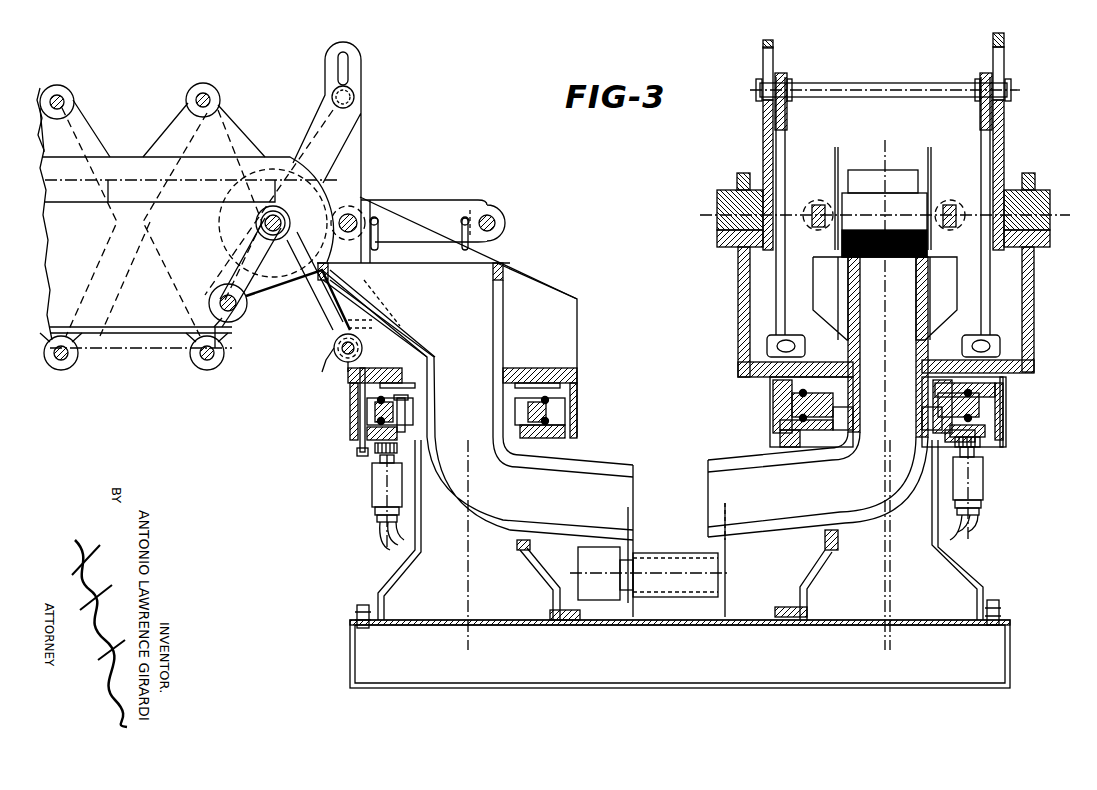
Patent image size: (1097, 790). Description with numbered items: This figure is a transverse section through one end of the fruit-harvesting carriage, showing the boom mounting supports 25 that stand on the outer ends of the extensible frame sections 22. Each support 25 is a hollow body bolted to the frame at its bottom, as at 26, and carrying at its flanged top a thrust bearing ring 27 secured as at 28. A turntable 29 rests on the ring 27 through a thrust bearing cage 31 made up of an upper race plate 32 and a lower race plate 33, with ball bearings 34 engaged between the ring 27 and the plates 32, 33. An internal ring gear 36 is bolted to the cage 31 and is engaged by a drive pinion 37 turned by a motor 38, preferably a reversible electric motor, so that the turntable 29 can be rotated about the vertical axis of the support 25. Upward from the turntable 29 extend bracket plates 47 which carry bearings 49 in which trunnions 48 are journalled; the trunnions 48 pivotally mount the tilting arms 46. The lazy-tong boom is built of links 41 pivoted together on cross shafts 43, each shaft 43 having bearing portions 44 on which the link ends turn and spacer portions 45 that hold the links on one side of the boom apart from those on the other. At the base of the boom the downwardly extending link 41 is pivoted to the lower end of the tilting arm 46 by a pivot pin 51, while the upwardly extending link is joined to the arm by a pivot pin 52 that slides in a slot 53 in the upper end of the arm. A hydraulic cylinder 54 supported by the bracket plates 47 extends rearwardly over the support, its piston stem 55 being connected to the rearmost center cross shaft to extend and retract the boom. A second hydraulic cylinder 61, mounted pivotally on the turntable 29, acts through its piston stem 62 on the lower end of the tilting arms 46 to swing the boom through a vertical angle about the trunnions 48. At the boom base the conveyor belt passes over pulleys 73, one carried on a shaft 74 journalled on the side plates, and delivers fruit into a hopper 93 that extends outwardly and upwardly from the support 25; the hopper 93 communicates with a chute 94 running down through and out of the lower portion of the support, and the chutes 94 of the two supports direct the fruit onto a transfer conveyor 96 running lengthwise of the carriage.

The extensible frame section 22 is at (350, 660).
The boom mounting support 25 is at (415, 556).
The bolted connection 26 is at (357, 612).
The thrust bearing ring 27 is at (370, 418).
The bolted connection 28 is at (408, 424).
The turntable 29 is at (578, 368).
The thrust bearing cage 31 is at (580, 408).
The upper race plate 32 is at (580, 388).
The lower race plate 33 is at (560, 440).
The ball bearings 34 is at (575, 418).
The internal ring gear 36 is at (372, 452).
The drive pinion 37 is at (372, 484).
The motor 38 is at (372, 508).
The link 41 is at (98, 140).
The cross shaft 43 is at (265, 228).
The bearing portion 44 is at (800, 340).
The spacer portion 45 is at (825, 100).
The tilting arm 46 is at (362, 148).
The bracket plate 47 is at (380, 196).
The trunnion 48 is at (362, 238).
The bearing 49 is at (717, 212).
The pivot pin 51 is at (340, 358).
The pivot pin 52 is at (356, 100).
The slot 53 is at (350, 72).
The hydraulic cylinder 54 is at (448, 210).
The piston stem 55 is at (348, 215).
The hydraulic cylinder 61 is at (400, 335).
The piston stem 62 is at (372, 332).
The pulley 73 is at (244, 288).
The shaft 74 is at (222, 285).
The hopper 93 is at (338, 326).
The chute 94 is at (620, 470).
The transfer conveyor 96 is at (676, 618).